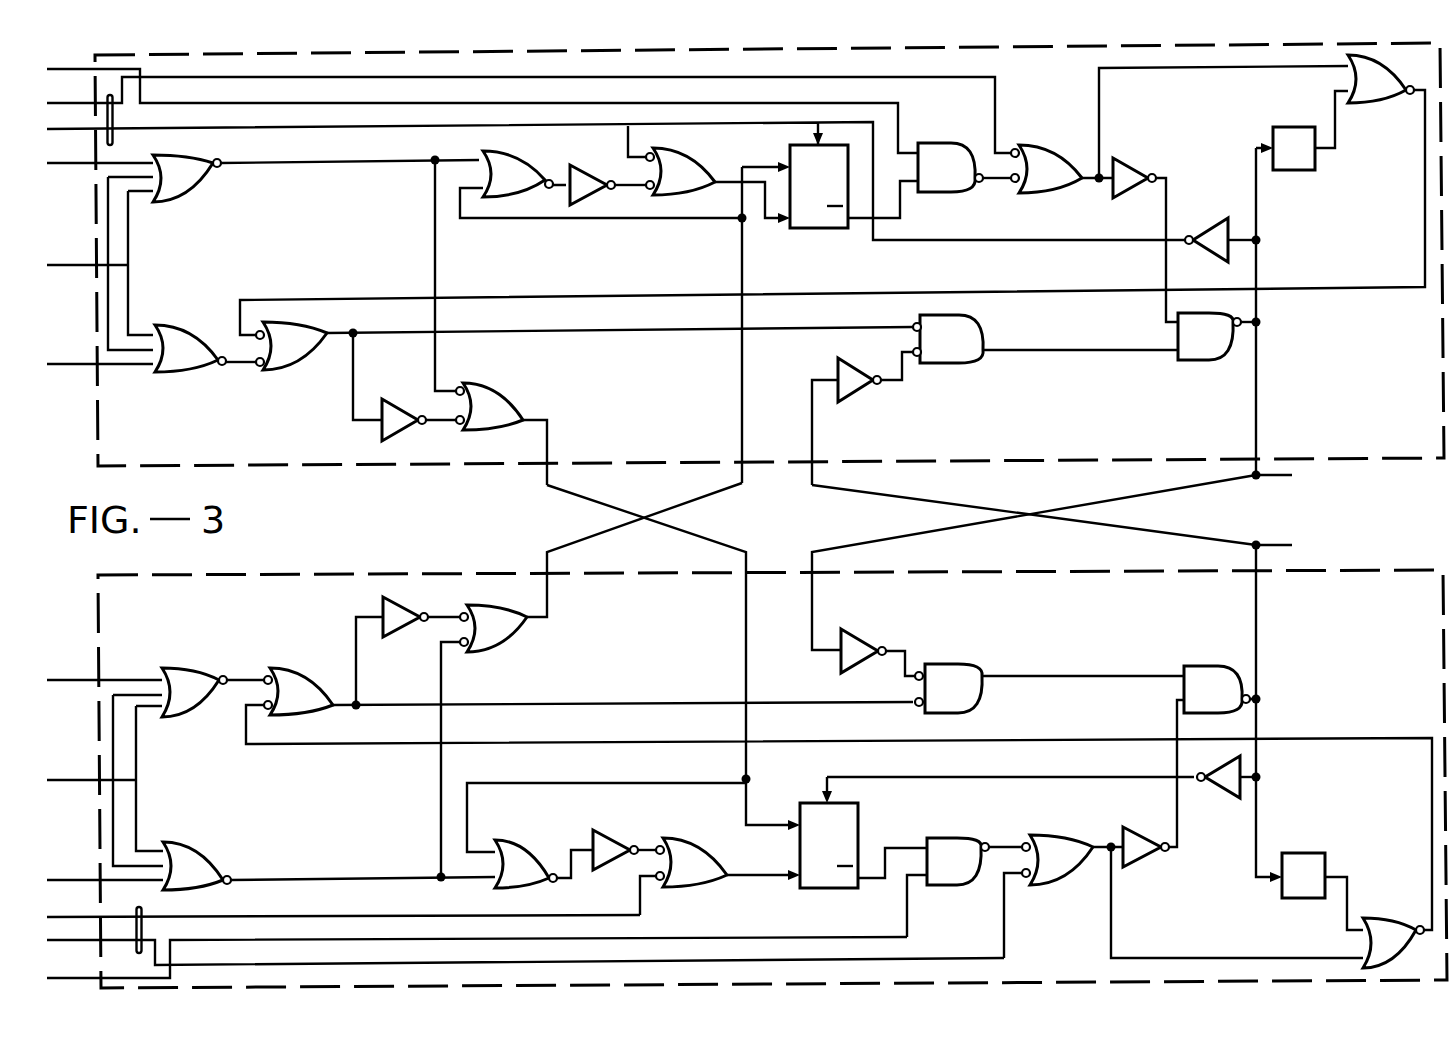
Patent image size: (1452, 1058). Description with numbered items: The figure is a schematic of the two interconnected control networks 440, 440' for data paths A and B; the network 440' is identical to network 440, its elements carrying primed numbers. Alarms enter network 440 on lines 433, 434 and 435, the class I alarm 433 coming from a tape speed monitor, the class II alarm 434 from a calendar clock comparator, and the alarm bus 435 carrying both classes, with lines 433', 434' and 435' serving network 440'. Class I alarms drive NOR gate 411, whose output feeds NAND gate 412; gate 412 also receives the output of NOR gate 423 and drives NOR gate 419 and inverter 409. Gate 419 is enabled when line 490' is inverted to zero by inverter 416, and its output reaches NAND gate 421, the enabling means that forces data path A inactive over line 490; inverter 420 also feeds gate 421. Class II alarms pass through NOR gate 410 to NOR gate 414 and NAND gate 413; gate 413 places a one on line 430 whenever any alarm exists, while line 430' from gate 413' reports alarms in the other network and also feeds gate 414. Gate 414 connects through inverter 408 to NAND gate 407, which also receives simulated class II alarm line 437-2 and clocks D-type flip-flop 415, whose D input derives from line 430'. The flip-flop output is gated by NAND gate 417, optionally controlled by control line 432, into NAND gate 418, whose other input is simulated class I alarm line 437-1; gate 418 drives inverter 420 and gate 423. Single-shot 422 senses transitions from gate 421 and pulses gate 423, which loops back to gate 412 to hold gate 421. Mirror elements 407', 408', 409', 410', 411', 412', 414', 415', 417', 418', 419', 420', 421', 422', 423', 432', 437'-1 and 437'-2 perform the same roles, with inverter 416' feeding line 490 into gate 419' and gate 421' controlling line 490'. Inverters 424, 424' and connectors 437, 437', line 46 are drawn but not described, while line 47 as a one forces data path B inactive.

The NAND gate 407 is at (718, 175).
The inverter 408 is at (608, 193).
The inverter 409 is at (386, 393).
The NOR gate 410 is at (316, 187).
The NOR gate 411 is at (205, 332).
The NAND gate 412 is at (584, 363).
The NAND gate 413 is at (491, 322).
The NOR gate 414 is at (603, 189).
The D-type flip-flop 415 is at (830, 312).
The inverter 416 is at (863, 421).
The NAND gate 417 is at (964, 149).
The NAND gate 418 is at (1179, 129).
The NOR gate 419 is at (1029, 344).
The inverter 420 is at (1148, 227).
The NAND gate 421 is at (1209, 354).
The single-shot 422 is at (1299, 283).
The NOR gate 423 is at (832, 195).
The inverter 424 is at (1223, 221).
The output line 430 is at (634, 550).
The output line 430' is at (673, 657).
The control line 432 is at (530, 115).
The alarm line 433 is at (100, 393).
The alarm line 434 is at (100, 188).
The alarm bus 435 is at (100, 263).
The jumper connector 437 is at (138, 124).
The simulated class I alarm line 437-1 is at (458, 72).
The simulated class II alarm line 437-2 is at (468, 124).
The control network 440 is at (769, 274).
The control network 440' is at (772, 762).
The line 46 is at (812, 608).
The line 47 is at (812, 396).
The enable line 490 is at (1328, 488).
The enable line 490' is at (1330, 534).
The NAND gate 407' is at (720, 862).
The inverter 408' is at (624, 839).
The inverter 409' is at (408, 651).
The NOR gate 410' is at (329, 851).
The NOR gate 411' is at (213, 675).
The NAND gate 412' is at (839, 781).
The NAND gate 413' is at (508, 741).
The NOR gate 414' is at (606, 822).
The D-type flip-flop 415' is at (997, 834).
The inverter 416' is at (874, 641).
The NAND gate 417' is at (964, 871).
The NAND gate 418' is at (1183, 880).
The NOR gate 419' is at (1035, 672).
The inverter 420' is at (1153, 783).
The NAND gate 421' is at (1223, 713).
The single-shot 422' is at (1322, 873).
The NOR gate 423' is at (1393, 926).
The inverter 424' is at (1228, 792).
The control line 432' is at (477, 947).
The alarm line 433' is at (104, 656).
The alarm line 434' is at (105, 859).
The alarm bus 435' is at (105, 780).
The jumper connector 437' is at (127, 919).
The simulated class I alarm line 437'-1 is at (525, 953).
The simulated class II alarm line 437'-2 is at (343, 904).